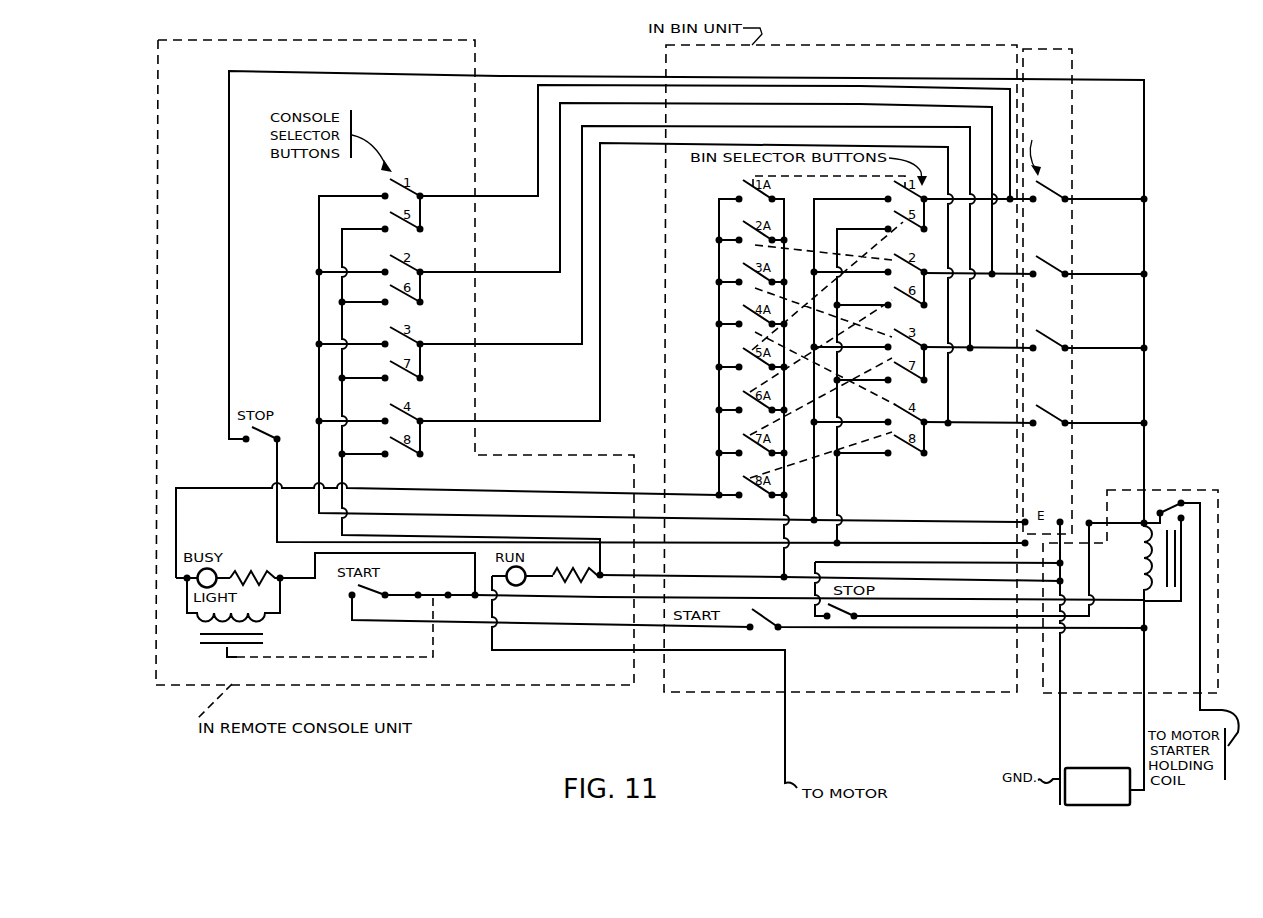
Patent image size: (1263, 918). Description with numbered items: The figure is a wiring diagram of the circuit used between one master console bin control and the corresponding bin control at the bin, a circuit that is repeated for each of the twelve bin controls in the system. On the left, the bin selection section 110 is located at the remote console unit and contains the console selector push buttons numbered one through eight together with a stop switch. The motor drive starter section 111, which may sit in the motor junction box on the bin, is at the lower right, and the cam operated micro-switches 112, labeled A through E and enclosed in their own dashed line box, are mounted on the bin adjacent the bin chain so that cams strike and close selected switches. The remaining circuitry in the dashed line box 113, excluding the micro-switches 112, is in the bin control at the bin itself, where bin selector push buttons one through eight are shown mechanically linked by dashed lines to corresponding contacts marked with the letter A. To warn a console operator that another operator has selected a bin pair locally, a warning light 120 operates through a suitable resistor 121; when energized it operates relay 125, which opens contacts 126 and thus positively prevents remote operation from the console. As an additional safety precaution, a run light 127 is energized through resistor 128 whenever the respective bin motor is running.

The bin selection section 110 is at (310, 40).
The motor drive starter section 111 is at (1164, 489).
The cam operated micro-switches 112 is at (1074, 185).
The bin control circuitry 113 is at (849, 46).
The warning light 120 is at (214, 571).
The resistor 121 is at (256, 574).
The relay 125 is at (228, 648).
The contacts 126 is at (433, 596).
The run light 127 is at (526, 571).
The resistor 128 is at (565, 582).